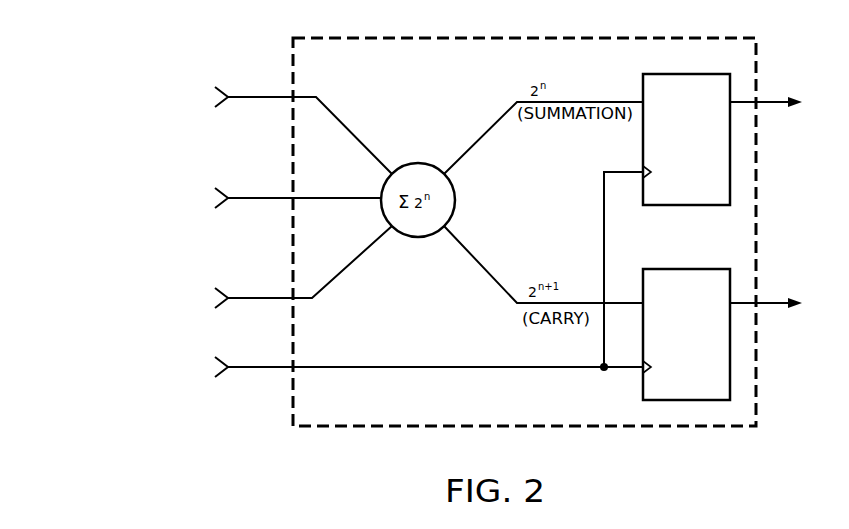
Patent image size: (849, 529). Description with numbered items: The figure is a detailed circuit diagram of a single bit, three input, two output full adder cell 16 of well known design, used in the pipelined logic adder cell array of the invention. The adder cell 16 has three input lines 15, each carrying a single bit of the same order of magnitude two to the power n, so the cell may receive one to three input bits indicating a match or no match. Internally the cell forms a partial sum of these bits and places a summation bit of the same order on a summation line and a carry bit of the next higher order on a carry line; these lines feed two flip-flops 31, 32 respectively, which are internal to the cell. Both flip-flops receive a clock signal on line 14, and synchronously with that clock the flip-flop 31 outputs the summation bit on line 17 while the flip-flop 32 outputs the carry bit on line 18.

The clock line 14 is at (267, 364).
The input lines 15 is at (280, 298).
The full adder cell 16 is at (568, 46).
The summation output line 17 is at (772, 104).
The carry output line 18 is at (773, 303).
The summation flip-flop 31 is at (678, 82).
The carry flip-flop 32 is at (682, 280).